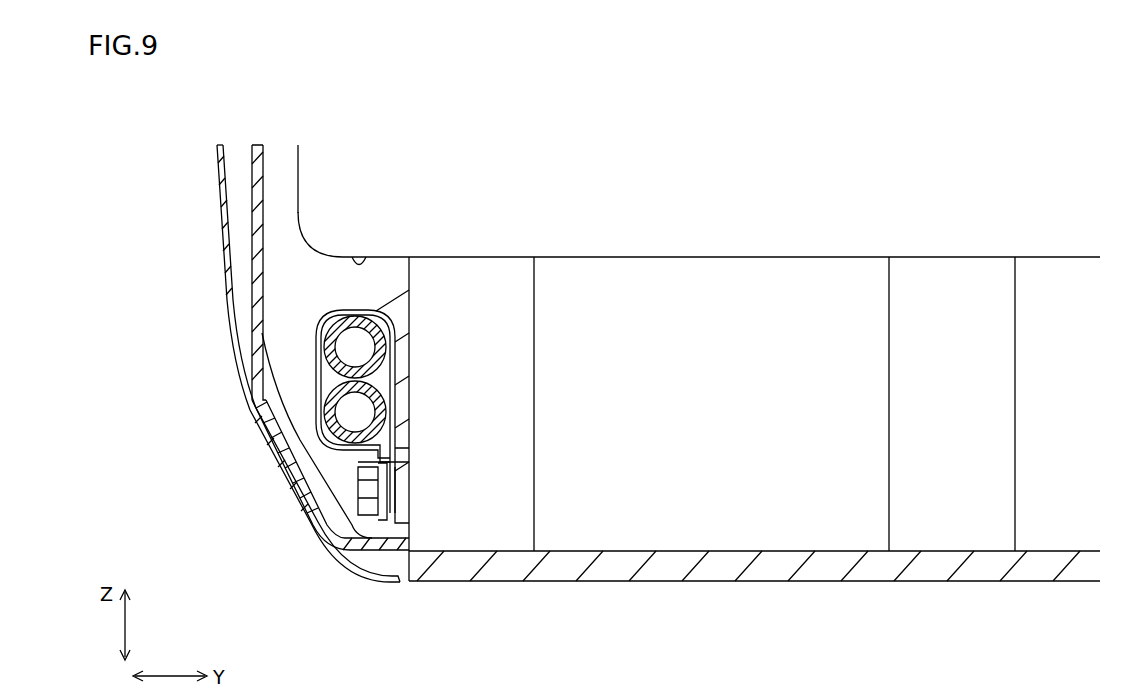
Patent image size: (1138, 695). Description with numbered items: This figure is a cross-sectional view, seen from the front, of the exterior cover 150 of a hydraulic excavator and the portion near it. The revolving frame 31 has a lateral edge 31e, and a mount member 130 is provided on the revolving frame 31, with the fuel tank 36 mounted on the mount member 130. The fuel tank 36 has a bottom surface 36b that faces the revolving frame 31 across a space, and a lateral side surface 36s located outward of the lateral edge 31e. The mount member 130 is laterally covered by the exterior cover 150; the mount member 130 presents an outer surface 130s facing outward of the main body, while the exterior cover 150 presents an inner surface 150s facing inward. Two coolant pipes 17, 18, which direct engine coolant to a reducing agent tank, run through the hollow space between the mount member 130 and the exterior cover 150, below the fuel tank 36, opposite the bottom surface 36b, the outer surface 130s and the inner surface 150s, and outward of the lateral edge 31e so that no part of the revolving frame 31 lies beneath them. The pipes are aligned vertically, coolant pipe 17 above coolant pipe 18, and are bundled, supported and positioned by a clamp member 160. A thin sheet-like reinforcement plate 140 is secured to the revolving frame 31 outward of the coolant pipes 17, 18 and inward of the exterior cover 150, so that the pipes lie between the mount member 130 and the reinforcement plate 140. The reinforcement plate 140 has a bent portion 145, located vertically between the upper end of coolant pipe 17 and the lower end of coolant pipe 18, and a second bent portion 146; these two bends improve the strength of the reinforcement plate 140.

The fuel tank 36 is at (679, 168).
The lateral side surface 36s is at (296, 178).
The bottom surface 36b is at (381, 257).
The mount member 130 is at (695, 348).
The outer surface 130s is at (408, 278).
The revolving frame 31 is at (746, 588).
The lateral edge 31e is at (409, 565).
The exterior cover 150 is at (267, 363).
The inner surface 150s is at (232, 277).
The reinforcement plate 140 is at (242, 238).
The bent portion 145 is at (262, 399).
The bent portion 146 is at (331, 541).
The clamp member 160 is at (318, 370).
The coolant pipe 17 is at (317, 340).
The coolant pipe 18 is at (317, 413).